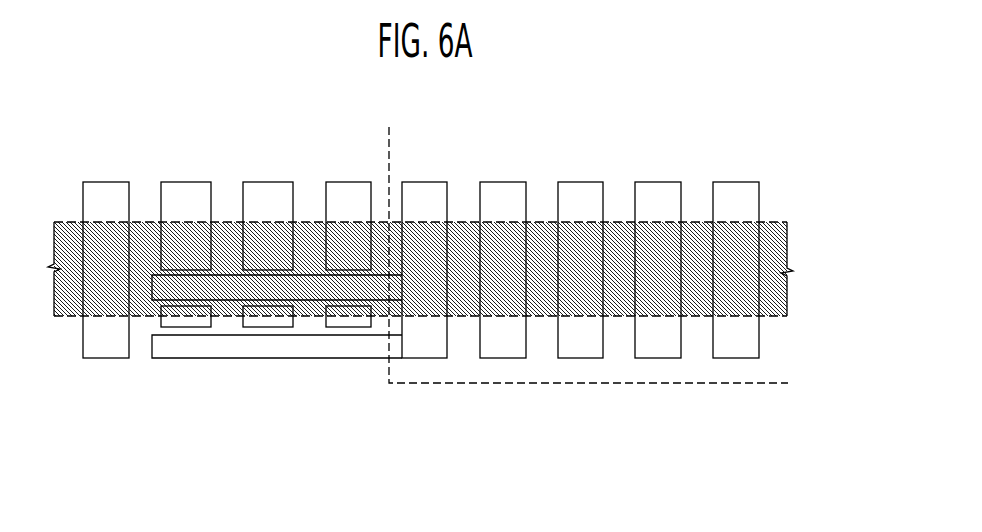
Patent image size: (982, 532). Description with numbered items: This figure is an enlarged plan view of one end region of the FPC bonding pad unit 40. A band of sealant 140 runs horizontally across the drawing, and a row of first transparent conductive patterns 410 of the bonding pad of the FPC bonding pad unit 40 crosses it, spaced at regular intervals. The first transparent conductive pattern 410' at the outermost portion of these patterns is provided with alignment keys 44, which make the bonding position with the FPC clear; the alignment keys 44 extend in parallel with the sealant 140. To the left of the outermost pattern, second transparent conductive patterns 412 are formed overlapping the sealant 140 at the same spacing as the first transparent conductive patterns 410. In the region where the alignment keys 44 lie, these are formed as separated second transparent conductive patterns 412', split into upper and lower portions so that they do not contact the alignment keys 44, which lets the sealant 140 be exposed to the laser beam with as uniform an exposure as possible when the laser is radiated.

The FPC bonding pad unit 40 is at (590, 390).
The alignment keys 44 is at (157, 286).
The sealant 140 is at (781, 237).
The first transparent conductive patterns 410 is at (510, 235).
The first transparent conductive patterns at the outermost portion 410' is at (436, 235).
The second transparent conductive patterns 412 is at (113, 235).
The separated second transparent conductive patterns 412' is at (193, 220).